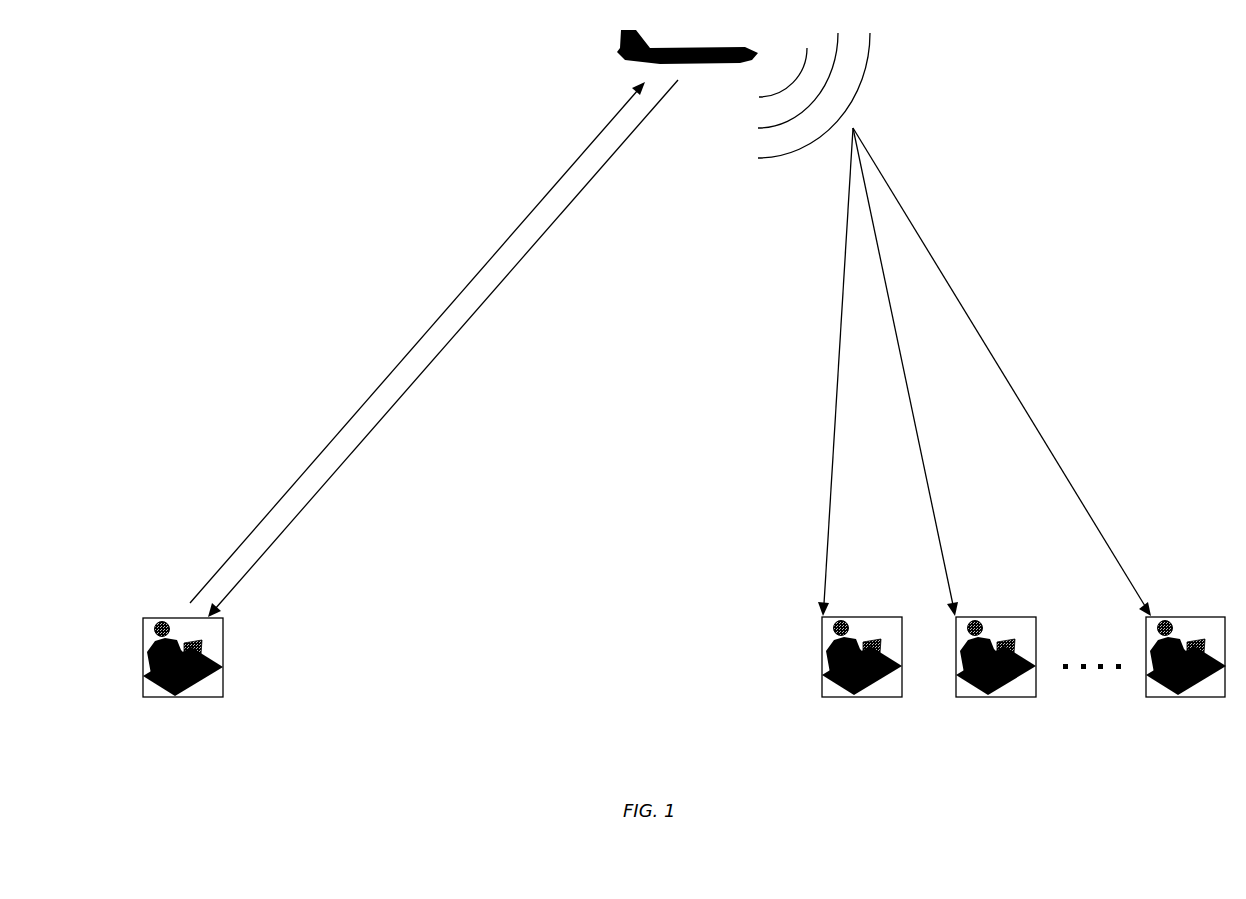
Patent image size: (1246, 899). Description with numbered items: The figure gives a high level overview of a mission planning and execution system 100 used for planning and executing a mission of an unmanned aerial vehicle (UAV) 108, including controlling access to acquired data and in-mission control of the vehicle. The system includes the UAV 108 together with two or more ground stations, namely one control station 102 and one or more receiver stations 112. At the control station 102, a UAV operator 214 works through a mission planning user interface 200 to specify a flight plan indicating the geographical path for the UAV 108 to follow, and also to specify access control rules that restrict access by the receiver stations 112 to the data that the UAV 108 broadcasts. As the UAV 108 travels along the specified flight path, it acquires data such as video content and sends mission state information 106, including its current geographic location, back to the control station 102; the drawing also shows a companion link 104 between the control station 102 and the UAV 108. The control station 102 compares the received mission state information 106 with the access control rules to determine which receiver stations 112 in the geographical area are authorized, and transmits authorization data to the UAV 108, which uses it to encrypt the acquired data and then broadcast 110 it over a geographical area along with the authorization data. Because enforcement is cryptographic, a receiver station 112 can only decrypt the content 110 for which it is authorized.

The mission planning and execution system 100 is at (664, 384).
The control station 102 is at (203, 627).
The uplink communication signal 104 is at (327, 445).
The mission state information 106 is at (397, 402).
The unmanned aerial vehicle 108 is at (617, 48).
The broadcast data 110 is at (843, 287).
The receiver stations 112 is at (1187, 616).
The mission planning user interface 200 is at (200, 642).
The operator 214 is at (155, 627).